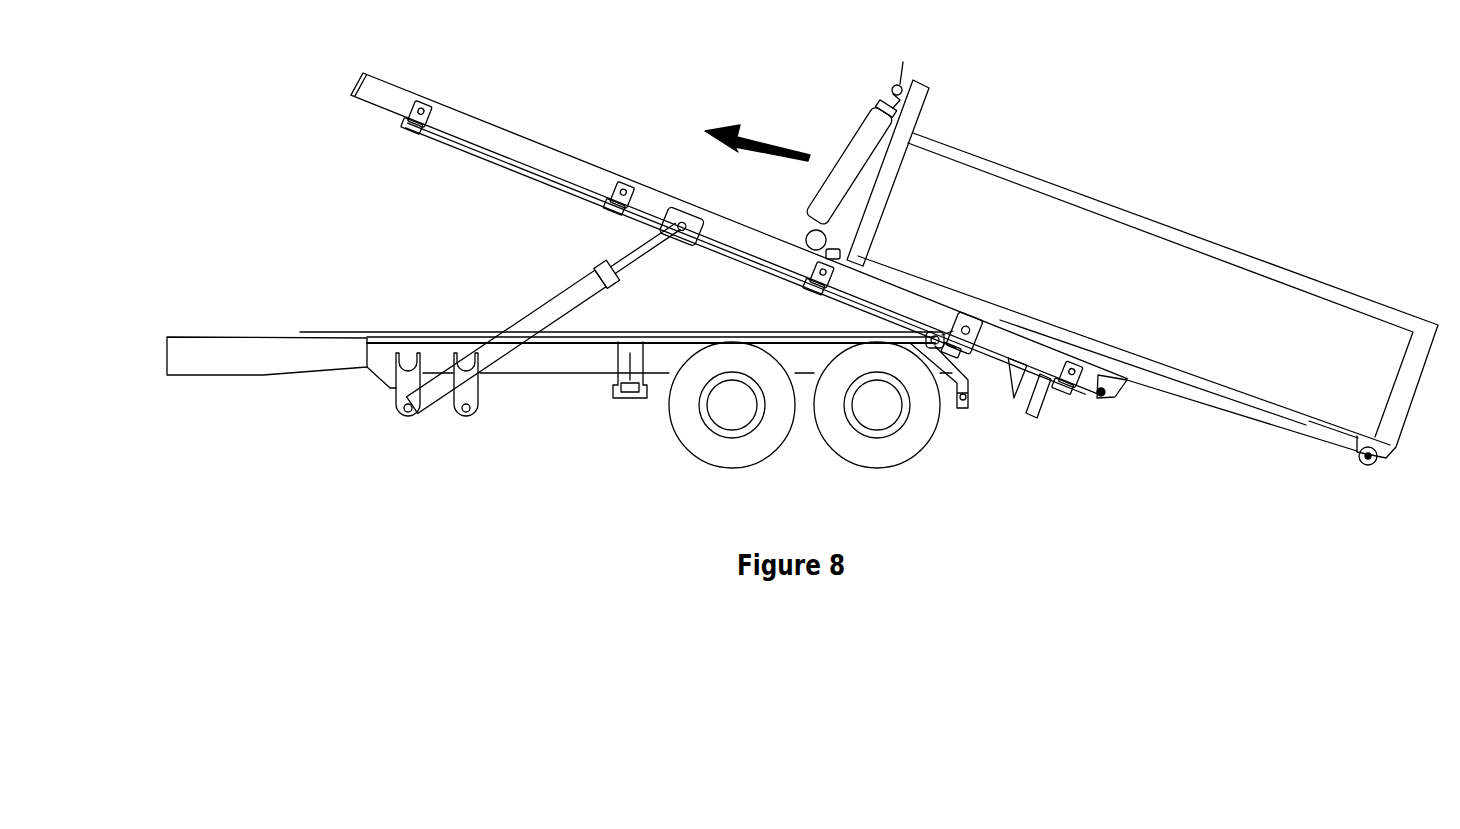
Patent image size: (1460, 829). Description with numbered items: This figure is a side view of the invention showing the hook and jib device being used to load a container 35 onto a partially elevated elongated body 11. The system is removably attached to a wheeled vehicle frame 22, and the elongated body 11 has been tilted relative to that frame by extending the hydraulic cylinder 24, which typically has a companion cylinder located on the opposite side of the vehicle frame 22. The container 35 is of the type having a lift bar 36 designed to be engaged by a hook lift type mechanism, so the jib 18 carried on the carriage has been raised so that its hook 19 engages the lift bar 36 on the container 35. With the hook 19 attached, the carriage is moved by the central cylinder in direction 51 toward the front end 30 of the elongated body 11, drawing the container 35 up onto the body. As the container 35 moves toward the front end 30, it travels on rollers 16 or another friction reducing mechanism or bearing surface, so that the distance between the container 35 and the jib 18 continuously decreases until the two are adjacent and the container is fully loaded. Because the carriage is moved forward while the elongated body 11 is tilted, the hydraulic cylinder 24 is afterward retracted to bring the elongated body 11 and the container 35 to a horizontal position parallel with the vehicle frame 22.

The elongated body 11 is at (503, 142).
The rollers 16 is at (1000, 343).
The jib 18 is at (860, 147).
The hook 19 is at (898, 85).
The wheeled vehicle frame 22 is at (558, 358).
The hydraulic cylinder 24 is at (508, 340).
The front end 30 is at (108, 314).
The container 35 is at (1005, 251).
The lift bar 36 is at (927, 88).
The direction 51 is at (785, 137).